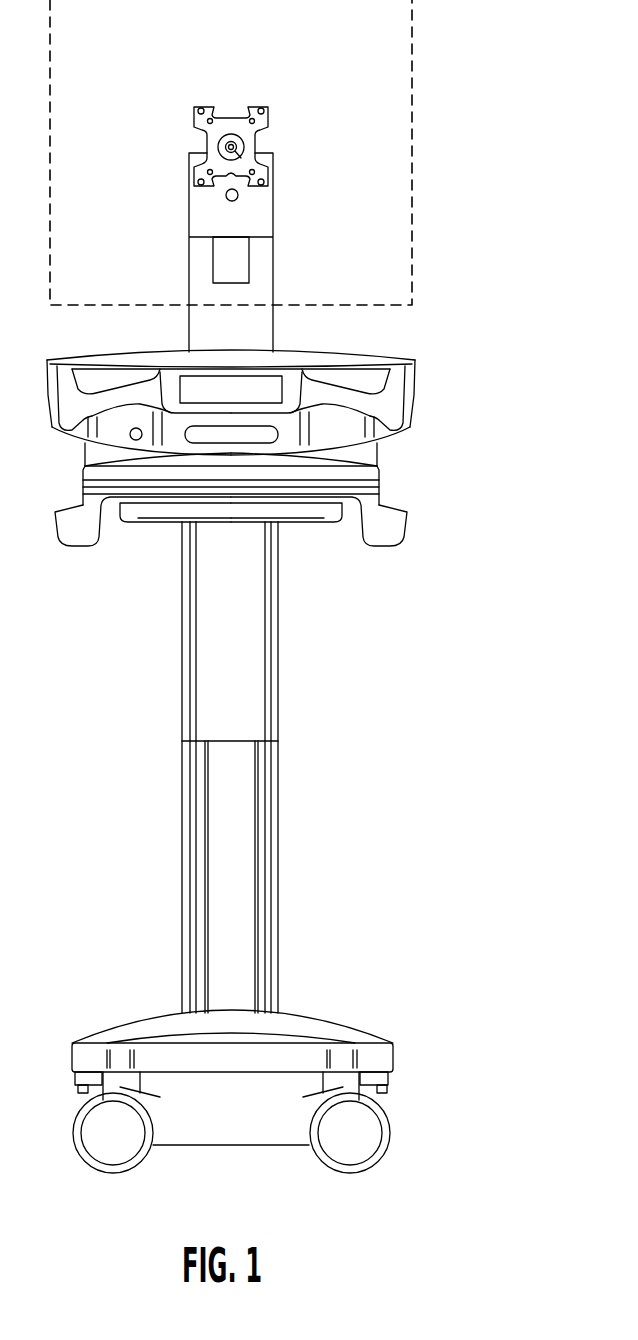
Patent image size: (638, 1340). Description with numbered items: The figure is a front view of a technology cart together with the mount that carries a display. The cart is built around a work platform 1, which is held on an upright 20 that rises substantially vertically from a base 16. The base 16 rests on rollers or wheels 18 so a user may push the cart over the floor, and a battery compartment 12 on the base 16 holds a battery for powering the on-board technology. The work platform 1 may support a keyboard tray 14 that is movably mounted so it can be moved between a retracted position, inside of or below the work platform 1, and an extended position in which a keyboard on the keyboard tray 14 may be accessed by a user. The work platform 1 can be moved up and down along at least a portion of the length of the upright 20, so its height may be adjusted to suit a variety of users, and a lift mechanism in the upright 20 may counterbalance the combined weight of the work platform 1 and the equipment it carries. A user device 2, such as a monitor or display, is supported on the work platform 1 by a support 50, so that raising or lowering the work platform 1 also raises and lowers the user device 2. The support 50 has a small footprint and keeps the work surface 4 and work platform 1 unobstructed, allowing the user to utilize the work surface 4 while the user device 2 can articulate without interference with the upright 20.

The work platform 1 is at (280, 674).
The user device 2 is at (412, 85).
The work surface 4 is at (283, 352).
The battery compartment 12 is at (390, 1088).
The keyboard tray 14 is at (378, 470).
The base 16 is at (394, 1040).
The wheels 18 is at (320, 1163).
The upright 20 is at (289, 760).
The support 50 is at (280, 261).